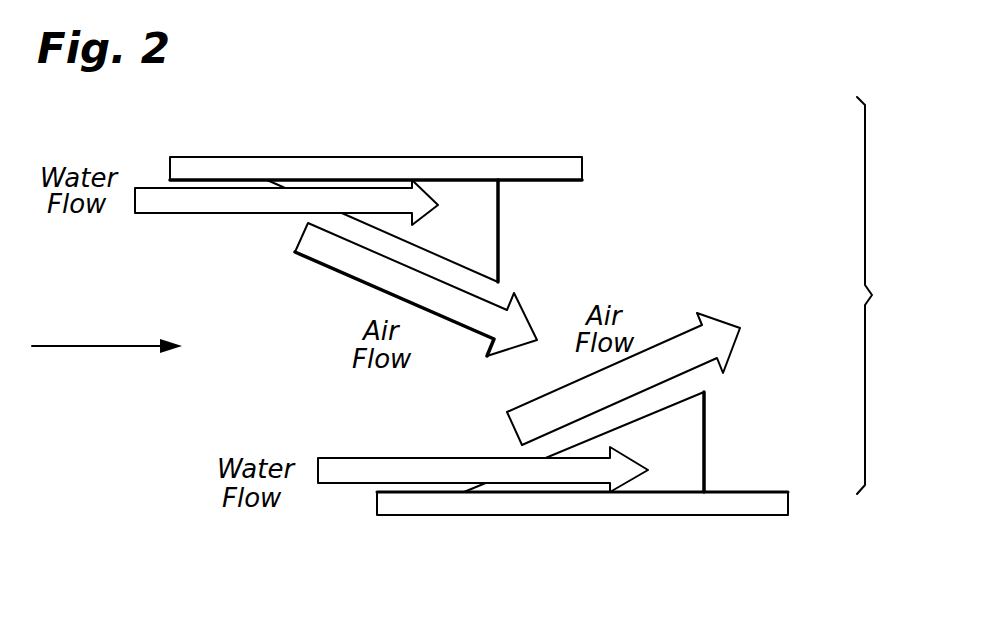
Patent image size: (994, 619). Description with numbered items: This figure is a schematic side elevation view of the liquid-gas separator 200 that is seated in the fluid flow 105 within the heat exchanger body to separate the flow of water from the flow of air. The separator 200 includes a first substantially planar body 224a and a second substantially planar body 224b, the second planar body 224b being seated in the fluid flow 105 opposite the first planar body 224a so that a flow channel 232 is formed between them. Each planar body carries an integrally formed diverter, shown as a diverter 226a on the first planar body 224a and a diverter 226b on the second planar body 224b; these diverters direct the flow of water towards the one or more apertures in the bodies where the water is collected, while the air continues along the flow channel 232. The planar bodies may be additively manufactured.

The liquid-gas separator 200 is at (886, 291).
The first planar body 224a is at (417, 500).
The second substantially planar body 224b is at (545, 157).
The diverter 226a is at (691, 438).
The diverter 226b is at (487, 233).
The flow channel 232 is at (272, 381).
The fluid flow path 105 is at (78, 347).